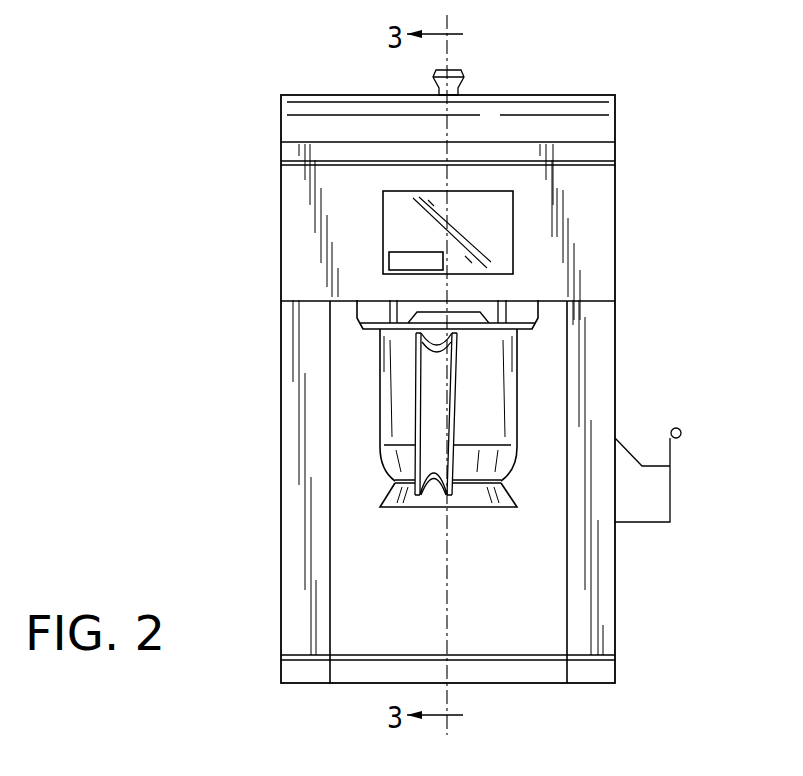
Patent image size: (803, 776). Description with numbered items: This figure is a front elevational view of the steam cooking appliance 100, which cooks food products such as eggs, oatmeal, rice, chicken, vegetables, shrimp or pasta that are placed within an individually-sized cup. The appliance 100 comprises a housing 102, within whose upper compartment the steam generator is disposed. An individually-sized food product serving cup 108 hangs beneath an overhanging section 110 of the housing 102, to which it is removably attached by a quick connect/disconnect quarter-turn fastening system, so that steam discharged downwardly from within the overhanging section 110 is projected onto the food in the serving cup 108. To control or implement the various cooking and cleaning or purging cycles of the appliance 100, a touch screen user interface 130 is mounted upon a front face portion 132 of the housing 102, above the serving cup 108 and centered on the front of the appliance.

The cooking appliance 100 is at (652, 139).
The housing 102 is at (281, 202).
The individually-sized food product serving cup 108 is at (490, 373).
The overhanging section 110 is at (598, 222).
The touch screen user interface 130 is at (491, 207).
The front face portion 132 is at (376, 230).